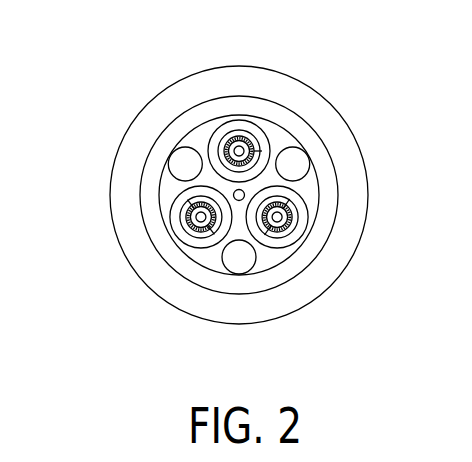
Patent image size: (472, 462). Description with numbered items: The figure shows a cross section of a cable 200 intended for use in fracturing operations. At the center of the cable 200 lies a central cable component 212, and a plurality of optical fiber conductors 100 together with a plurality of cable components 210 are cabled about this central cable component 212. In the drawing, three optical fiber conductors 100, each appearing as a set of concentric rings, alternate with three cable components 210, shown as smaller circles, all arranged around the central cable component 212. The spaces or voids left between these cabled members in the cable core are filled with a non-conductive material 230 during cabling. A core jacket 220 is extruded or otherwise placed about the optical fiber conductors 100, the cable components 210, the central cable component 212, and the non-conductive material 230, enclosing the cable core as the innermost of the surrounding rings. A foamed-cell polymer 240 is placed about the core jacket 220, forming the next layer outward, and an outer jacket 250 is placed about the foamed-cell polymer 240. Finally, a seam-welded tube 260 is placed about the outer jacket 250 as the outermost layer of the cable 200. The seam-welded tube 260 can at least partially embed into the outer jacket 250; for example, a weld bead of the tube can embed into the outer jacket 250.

The cable 200 is at (123, 42).
The optical fiber conductor 100 is at (224, 141).
The cable component 210 is at (177, 163).
The central cable component 212 is at (217, 230).
The core jacket 220 is at (322, 190).
The non-conductive material 230 is at (166, 197).
The foamed-cell polymer 240 is at (313, 252).
The outer jacket 250 is at (325, 139).
The seam-welded tube 260 is at (267, 75).